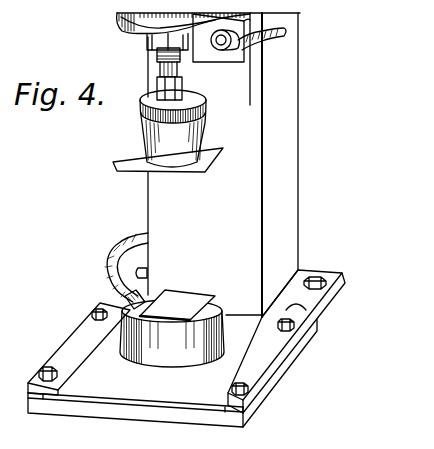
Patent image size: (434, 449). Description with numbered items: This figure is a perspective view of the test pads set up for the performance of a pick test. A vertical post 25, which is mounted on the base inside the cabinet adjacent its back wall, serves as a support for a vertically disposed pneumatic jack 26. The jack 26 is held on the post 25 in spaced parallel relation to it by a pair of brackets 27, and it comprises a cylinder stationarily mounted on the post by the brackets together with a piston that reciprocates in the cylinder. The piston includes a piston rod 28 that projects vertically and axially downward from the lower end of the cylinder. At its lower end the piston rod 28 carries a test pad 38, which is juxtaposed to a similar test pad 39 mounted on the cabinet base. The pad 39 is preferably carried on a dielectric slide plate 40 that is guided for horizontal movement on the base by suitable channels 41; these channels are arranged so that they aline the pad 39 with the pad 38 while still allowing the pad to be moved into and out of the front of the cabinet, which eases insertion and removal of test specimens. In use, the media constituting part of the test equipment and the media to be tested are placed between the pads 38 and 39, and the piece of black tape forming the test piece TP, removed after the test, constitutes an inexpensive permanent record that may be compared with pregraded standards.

The vertical post 25 is at (285, 205).
The pneumatic jack 26 is at (134, 31).
The brackets 27 is at (183, 62).
The piston rod 28 is at (157, 58).
The test pad 38 is at (202, 126).
The test pad 39 is at (155, 353).
The dielectric slide plate 40 is at (91, 387).
The channels 41 is at (72, 348).
The test piece TP is at (192, 294).